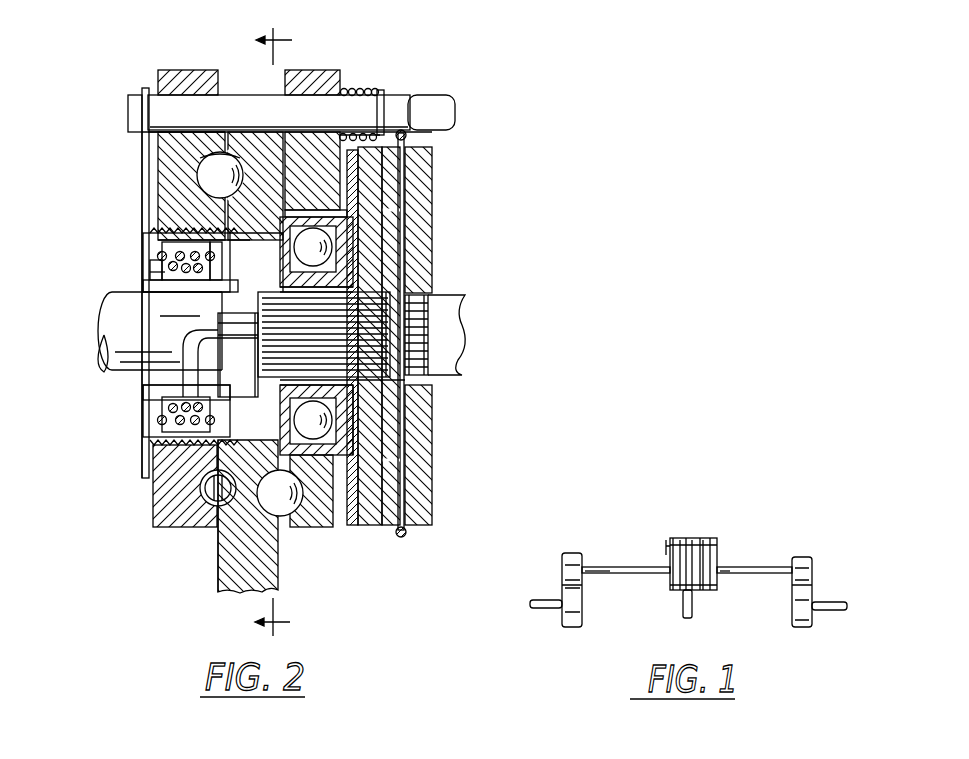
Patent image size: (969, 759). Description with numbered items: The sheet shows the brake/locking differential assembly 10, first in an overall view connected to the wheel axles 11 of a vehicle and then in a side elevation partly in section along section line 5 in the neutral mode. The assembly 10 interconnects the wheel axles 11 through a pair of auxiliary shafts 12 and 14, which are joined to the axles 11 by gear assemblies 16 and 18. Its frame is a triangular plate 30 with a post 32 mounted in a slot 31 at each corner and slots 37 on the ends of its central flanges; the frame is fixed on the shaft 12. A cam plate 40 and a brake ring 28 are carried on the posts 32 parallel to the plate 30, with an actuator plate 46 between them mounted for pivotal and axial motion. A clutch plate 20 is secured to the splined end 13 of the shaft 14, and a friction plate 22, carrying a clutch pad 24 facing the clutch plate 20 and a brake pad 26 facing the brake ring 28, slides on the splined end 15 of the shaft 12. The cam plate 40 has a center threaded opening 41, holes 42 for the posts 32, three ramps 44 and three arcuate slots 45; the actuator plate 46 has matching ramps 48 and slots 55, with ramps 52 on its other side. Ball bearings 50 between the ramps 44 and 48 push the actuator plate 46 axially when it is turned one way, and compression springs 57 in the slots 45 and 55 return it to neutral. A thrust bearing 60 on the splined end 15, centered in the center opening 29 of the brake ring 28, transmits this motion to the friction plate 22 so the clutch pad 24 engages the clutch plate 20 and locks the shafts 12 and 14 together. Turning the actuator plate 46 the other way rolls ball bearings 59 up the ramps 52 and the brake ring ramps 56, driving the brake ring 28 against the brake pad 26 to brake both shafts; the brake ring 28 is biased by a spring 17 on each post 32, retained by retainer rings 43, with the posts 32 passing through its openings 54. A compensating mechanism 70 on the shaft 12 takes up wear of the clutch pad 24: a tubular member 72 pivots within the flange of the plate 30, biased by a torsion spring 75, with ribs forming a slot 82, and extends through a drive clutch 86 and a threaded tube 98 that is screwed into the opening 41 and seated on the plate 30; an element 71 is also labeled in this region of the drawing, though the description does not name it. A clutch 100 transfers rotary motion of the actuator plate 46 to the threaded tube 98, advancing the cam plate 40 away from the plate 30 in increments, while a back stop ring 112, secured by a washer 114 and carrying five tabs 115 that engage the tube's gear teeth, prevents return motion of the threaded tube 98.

In FIG. 2, the section line 5 is at (264, 339).
In FIG. 2, the brake/locking differential assembly 10 is at (524, 64).
In FIG. 1, the brake/locking differential assembly 10 is at (728, 492).
In FIG. 1, the wheel axles 11 is at (838, 604).
In FIG. 2, the auxiliary shaft 12 is at (150, 339).
In FIG. 1, the auxiliary shaft 12 is at (618, 565).
In FIG. 2, the splined end of shaft 14 13 is at (420, 295).
In FIG. 2, the auxiliary shaft 14 is at (458, 295).
In FIG. 1, the auxiliary shaft 14 is at (768, 566).
In FIG. 2, the splined end of shaft 12 15 is at (392, 385).
In FIG. 1, the gear assembly 16 is at (596, 612).
In FIG. 2, the spring 17 is at (372, 92).
In FIG. 1, the gear assembly 18 is at (782, 615).
In FIG. 2, the clutch plate 20 is at (430, 150).
In FIG. 2, the friction plate 22 is at (370, 523).
In FIG. 2, the clutch pad 24 is at (393, 172).
In FIG. 2, the brake pad 26 is at (352, 525).
In FIG. 2, the brake ring 28 is at (313, 92).
In FIG. 2, the center opening 29 is at (320, 212).
In FIG. 2, the triangular base plate 30 is at (145, 161).
In FIG. 2, the slot 31 is at (130, 119).
In FIG. 2, the post 32 is at (142, 95).
In FIG. 2, the slots 37 is at (150, 239).
In FIG. 2, the cam plate 40 is at (162, 70).
In FIG. 2, the center threaded opening 41 is at (185, 486).
In FIG. 2, the holes 42 is at (168, 92).
In FIG. 2, the retainer rings 43 is at (383, 92).
In FIG. 2, the ramps 44 is at (202, 160).
In FIG. 2, the arcuate slots 45 is at (210, 492).
In FIG. 2, the actuator plate 46 is at (222, 590).
In FIG. 1, the actuator plate 46 is at (688, 618).
In FIG. 2, the ramps 48 is at (240, 160).
In FIG. 2, the ball bearings 50 is at (212, 176).
In FIG. 2, the ramps 52 is at (228, 548).
In FIG. 2, the openings 54 is at (350, 88).
In FIG. 2, the arcuate slots 55 is at (268, 512).
In FIG. 2, the ramps 56 is at (300, 522).
In FIG. 2, the compression springs 57 is at (204, 478).
In FIG. 2, the ball bearings 59 is at (292, 530).
In FIG. 2, the thrust bearing 60 is at (368, 415).
In FIG. 2, the compensating mechanism 70 is at (128, 290).
In FIG. 2, the tube 71 is at (205, 330).
In FIG. 2, the tubular member 72 is at (150, 389).
In FIG. 2, the torsion spring 75 is at (150, 280).
In FIG. 2, the slot 82 is at (245, 335).
In FIG. 2, the drive clutch 86 is at (283, 245).
In FIG. 2, the threaded tube 98 is at (190, 235).
In FIG. 2, the clutch 100 is at (238, 180).
In FIG. 2, the back stop ring 112 is at (165, 240).
In FIG. 2, the washer 114 is at (152, 419).
In FIG. 2, the tabs 115 is at (152, 448).